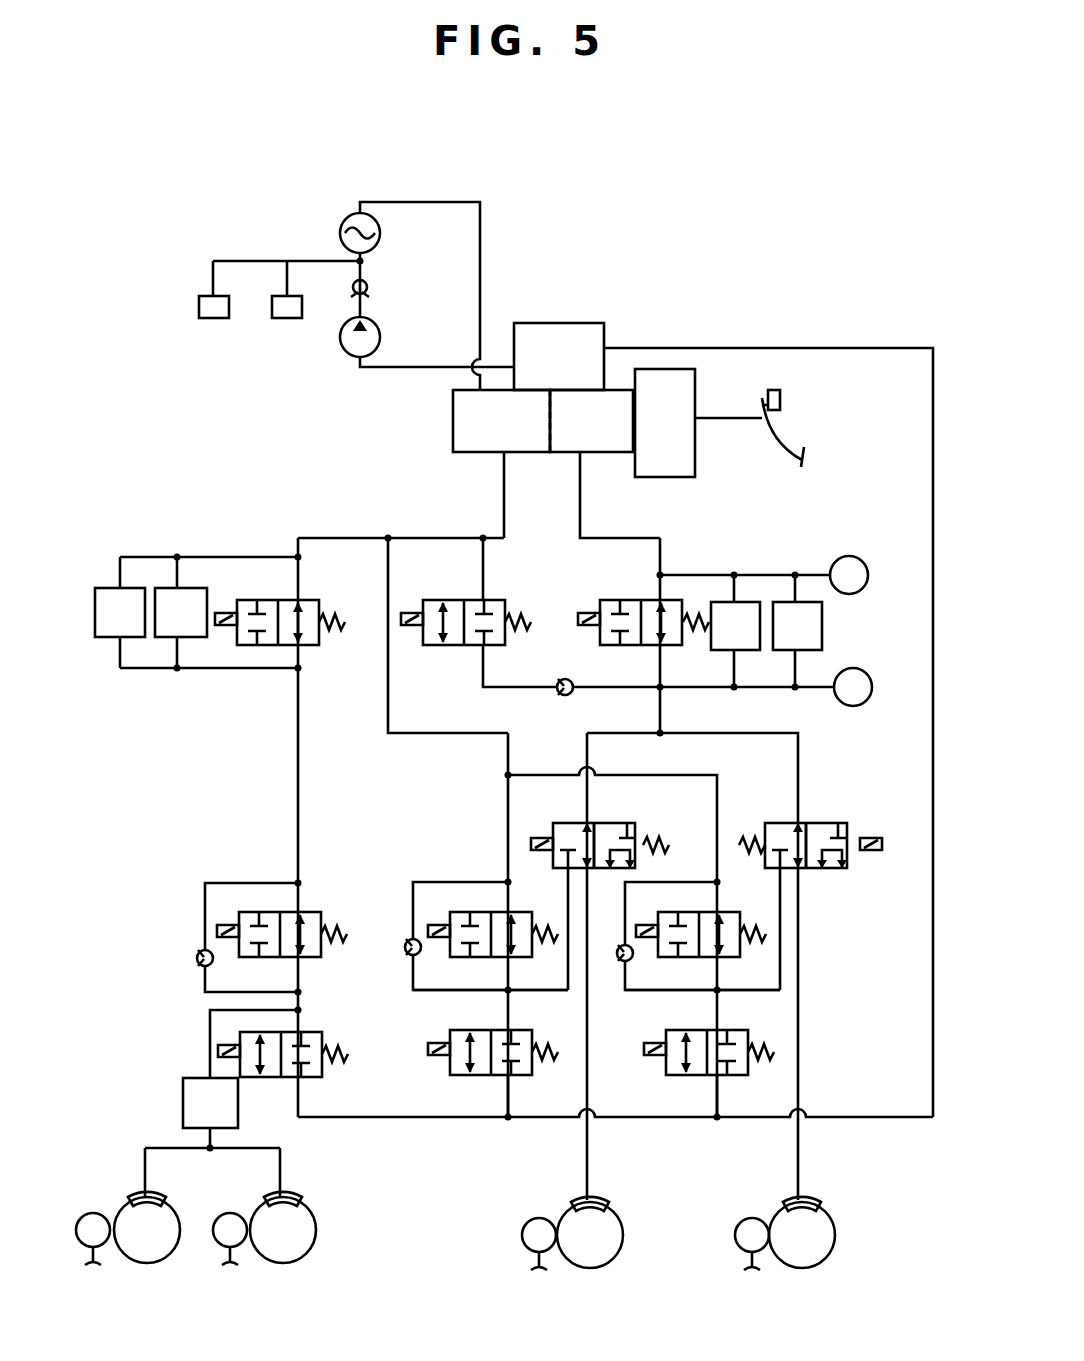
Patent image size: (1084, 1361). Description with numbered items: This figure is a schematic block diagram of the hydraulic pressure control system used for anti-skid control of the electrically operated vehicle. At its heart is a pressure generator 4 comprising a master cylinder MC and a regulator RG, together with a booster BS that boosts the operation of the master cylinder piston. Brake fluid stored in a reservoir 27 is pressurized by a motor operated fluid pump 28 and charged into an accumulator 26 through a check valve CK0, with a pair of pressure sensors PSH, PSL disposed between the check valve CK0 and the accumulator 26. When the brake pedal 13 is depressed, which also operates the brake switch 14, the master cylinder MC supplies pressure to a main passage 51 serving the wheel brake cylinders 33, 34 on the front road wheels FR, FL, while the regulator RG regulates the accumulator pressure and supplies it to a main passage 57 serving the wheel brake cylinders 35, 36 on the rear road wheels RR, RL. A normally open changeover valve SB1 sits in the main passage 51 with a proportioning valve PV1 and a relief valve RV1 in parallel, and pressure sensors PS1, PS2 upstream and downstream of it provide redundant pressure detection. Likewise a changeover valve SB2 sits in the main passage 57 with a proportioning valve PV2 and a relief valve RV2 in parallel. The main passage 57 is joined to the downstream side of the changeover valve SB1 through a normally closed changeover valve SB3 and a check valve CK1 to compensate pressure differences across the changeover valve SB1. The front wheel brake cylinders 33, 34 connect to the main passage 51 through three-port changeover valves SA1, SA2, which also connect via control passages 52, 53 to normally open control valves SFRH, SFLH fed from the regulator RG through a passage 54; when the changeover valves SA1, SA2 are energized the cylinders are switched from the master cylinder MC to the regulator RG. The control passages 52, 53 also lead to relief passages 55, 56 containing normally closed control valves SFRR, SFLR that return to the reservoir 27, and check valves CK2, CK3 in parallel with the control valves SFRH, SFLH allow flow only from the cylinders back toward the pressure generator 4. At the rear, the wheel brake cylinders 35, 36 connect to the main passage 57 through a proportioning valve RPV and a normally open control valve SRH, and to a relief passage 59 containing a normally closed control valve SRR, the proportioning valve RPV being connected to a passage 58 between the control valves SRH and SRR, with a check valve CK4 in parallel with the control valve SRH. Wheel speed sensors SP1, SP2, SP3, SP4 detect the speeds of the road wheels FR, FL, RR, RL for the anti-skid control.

The pressure generator 4 is at (665, 446).
The brake pedal 13 is at (791, 465).
The brake switch 14 is at (780, 392).
The accumulator 26 is at (345, 222).
The reservoir 27 is at (535, 336).
The motor operated fluid pump 28 is at (346, 358).
The wheel brake cylinder 33 is at (809, 1202).
The wheel brake cylinder 34 is at (597, 1202).
The wheel brake cylinder 35 is at (289, 1197).
The wheel brake cylinder 36 is at (151, 1197).
The main passage 51 is at (660, 712).
The control passage 52 is at (745, 995).
The control passage 53 is at (530, 995).
The passage 54 is at (388, 698).
The relief passage 55 is at (720, 1095).
The relief passage 56 is at (510, 1095).
The main passage 57 is at (298, 720).
The passage 58 is at (300, 995).
The relief passage 59 is at (358, 1120).
The regulator RG is at (501, 421).
The master cylinder MC is at (591, 421).
The booster BS is at (660, 422).
The pressure sensor PSH is at (216, 324).
The pressure sensor PSL is at (287, 324).
The check valve CK0 is at (368, 290).
The check valve CK1 is at (572, 678).
The check valve CK2 is at (612, 1000).
The check valve CK3 is at (405, 938).
The check valve CK4 is at (199, 953).
The proportioning valve PV1 is at (735, 626).
The relief valve RV1 is at (797, 626).
The proportioning valve PV2 is at (120, 612).
The relief valve RV2 is at (181, 612).
The pressure sensor PS1 is at (859, 549).
The pressure sensor PS2 is at (858, 706).
The changeover valve SB1 is at (619, 600).
The changeover valve SB2 is at (300, 600).
The changeover valve SB3 is at (484, 600).
The changeover valve SA1 is at (811, 823).
The changeover valve SA2 is at (596, 823).
The control valve SRH is at (302, 912).
The control valve SRR is at (310, 1078).
The control valve SFLH is at (493, 949).
The control valve SFLR is at (493, 1072).
The control valve SFRH is at (701, 949).
The control valve SFRR is at (709, 1072).
The proportioning valve RPV is at (210, 1103).
The wheel speed sensor SP1 is at (749, 1218).
The wheel speed sensor SP2 is at (535, 1220).
The wheel speed sensor SP3 is at (228, 1215).
The wheel speed sensor SP4 is at (90, 1215).
The front left road wheel FL is at (597, 1241).
The front right road wheel FR is at (810, 1241).
The rear left road wheel RL is at (152, 1236).
The rear right road wheel RR is at (290, 1236).